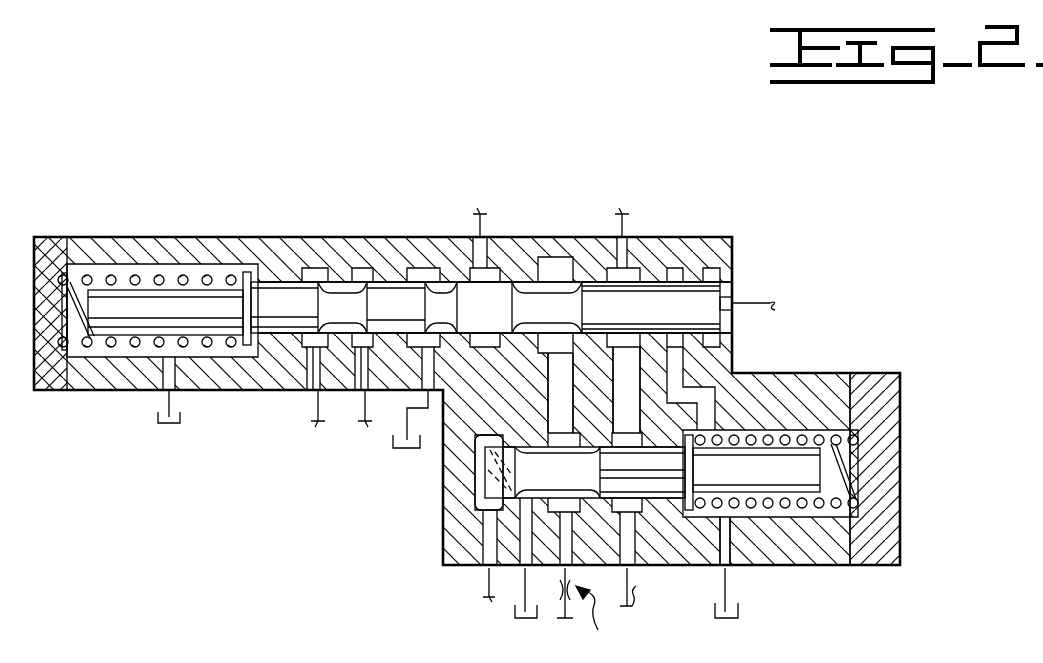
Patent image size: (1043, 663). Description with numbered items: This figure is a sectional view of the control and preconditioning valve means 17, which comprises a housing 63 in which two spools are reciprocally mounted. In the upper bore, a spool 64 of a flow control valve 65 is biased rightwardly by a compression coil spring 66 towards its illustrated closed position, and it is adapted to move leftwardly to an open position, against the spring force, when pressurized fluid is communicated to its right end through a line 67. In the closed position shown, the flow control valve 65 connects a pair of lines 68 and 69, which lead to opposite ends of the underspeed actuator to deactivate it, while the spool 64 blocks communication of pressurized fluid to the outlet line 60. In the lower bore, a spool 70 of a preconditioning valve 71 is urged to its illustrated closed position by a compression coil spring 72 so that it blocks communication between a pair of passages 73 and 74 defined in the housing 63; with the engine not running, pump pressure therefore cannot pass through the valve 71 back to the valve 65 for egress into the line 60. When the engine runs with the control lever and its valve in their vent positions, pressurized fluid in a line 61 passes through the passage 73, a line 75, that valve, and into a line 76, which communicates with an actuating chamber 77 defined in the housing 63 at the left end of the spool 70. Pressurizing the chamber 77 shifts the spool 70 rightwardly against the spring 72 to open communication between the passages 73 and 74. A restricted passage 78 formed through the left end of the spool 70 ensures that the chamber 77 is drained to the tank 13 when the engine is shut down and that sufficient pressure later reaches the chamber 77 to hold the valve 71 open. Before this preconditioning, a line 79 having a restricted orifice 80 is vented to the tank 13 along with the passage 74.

The tank 13 is at (158, 420).
The control and preconditioning valve means 17 is at (467, 418).
The outlet line 60 is at (490, 221).
The line 61 is at (631, 223).
The housing 63 is at (733, 243).
The spool 64 is at (288, 278).
The flow control valve 65 is at (397, 243).
The compression coil spring 66 is at (190, 278).
The line 67 is at (752, 302).
The line 68 is at (318, 399).
The line 69 is at (368, 423).
The spool 70 is at (660, 508).
The preconditioning valve 71 is at (753, 545).
The compression coil spring 72 is at (773, 430).
The passage 73 is at (640, 407).
The passage 74 is at (551, 400).
The line 75 is at (640, 595).
The line 76 is at (489, 584).
The actuating chamber 77 is at (478, 458).
The restricted passage 78 is at (488, 494).
The line 79 is at (558, 618).
The restricted orifice 80 is at (592, 615).